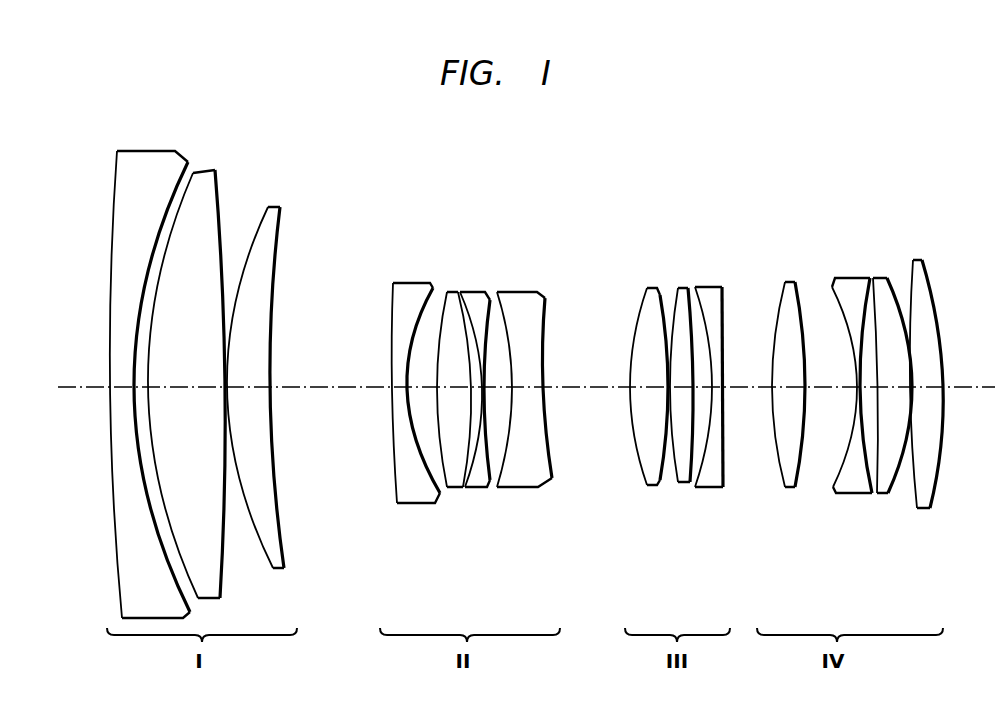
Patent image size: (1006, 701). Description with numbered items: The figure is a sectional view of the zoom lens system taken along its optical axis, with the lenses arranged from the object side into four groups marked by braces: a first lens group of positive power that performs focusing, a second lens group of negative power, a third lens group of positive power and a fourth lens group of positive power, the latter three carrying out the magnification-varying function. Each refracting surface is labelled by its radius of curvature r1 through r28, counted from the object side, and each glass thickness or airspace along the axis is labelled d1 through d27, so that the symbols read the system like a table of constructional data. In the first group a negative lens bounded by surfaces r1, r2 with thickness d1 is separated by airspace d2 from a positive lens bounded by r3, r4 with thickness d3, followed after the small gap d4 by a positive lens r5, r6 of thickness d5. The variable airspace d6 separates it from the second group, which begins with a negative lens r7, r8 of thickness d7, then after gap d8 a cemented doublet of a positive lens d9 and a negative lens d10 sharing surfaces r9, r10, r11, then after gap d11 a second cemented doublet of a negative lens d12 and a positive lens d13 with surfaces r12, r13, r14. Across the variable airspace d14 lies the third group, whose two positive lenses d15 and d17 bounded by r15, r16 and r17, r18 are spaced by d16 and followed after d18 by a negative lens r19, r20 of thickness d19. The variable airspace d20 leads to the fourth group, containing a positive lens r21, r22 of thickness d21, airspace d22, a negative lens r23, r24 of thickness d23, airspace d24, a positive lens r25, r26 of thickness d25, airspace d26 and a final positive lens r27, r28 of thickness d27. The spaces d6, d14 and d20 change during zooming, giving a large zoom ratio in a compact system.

The radius of curvature of first lens surface r1 is at (113, 180).
The radius of curvature of second lens surface r2 is at (175, 182).
The radius of curvature of third lens surface r3 is at (188, 190).
The radius of curvature of fourth lens surface r4 is at (221, 195).
The radius of curvature of fifth lens surface r5 is at (253, 237).
The radius of curvature of sixth lens surface r6 is at (278, 233).
The radius of curvature of seventh lens surface r7 is at (392, 317).
The radius of curvature of eighth lens surface r8 is at (429, 308).
The radius of curvature of ninth lens surface r9 is at (444, 307).
The radius of curvature of tenth lens surface r10 is at (450, 292).
The radius of curvature of eleventh lens surface r11 is at (483, 312).
The radius of curvature of twelfth lens surface r12 is at (489, 320).
The radius of curvature of thirteenth lens surface r13 is at (522, 310).
The radius of curvature of fourteenth lens surface r14 is at (546, 318).
The radius of curvature of fifteenth lens surface r15 is at (640, 317).
The radius of curvature of sixteenth lens surface r16 is at (662, 302).
The radius of curvature of seventeenth lens surface r17 is at (673, 295).
The radius of curvature of eighteenth lens surface r18 is at (685, 292).
The radius of curvature of nineteenth lens surface r19 is at (707, 288).
The radius of curvature of twentieth lens surface r20 is at (725, 292).
The radius of curvature of twenty-first lens surface r21 is at (777, 317).
The radius of curvature of twenty-second lens surface r22 is at (802, 297).
The radius of curvature of twenty-third lens surface r23 is at (836, 302).
The radius of curvature of twenty-fourth lens surface r24 is at (867, 296).
The radius of curvature of twenty-fifth lens surface r25 is at (878, 278).
The radius of curvature of twenty-sixth lens surface r26 is at (890, 287).
The radius of curvature of twenty-seventh lens surface r27 is at (913, 262).
The radius of curvature of twenty-eighth lens surface r28 is at (933, 300).
The thickness of first lens d1 is at (120, 392).
The first airspace d2 is at (141, 392).
The thickness of second lens d3 is at (168, 392).
The second airspace d4 is at (224, 392).
The thickness of third lens d5 is at (248, 392).
The variable airspace between first and second lens groups d6 is at (300, 392).
The thickness of fourth lens d7 is at (397, 392).
The airspace between fourth and fifth lenses d8 is at (412, 392).
The thickness of fifth lens d9 is at (452, 392).
The thickness of sixth lens d10 is at (477, 392).
The airspace between sixth and seventh lenses d11 is at (494, 392).
The thickness of seventh lens d12 is at (498, 392).
The thickness of eighth lens d13 is at (530, 392).
The variable airspace between second and third lens groups d14 is at (605, 392).
The thickness of ninth lens d15 is at (648, 392).
The airspace between ninth and tenth lenses d16 is at (668, 386).
The thickness of tenth lens d17 is at (675, 392).
The airspace between tenth and eleventh lenses d18 is at (701, 392).
The thickness of eleventh lens d19 is at (712, 392).
The variable airspace between third and fourth lens groups d20 is at (747, 392).
The thickness of twelfth lens d21 is at (786, 386).
The airspace between twelfth and thirteenth lenses d22 is at (823, 392).
The thickness of thirteenth lens d23 is at (857, 385).
The airspace between thirteenth and fourteenth lenses d24 is at (866, 392).
The thickness of fourteenth lens d25 is at (893, 392).
The airspace between fourteenth and fifteenth lenses d26 is at (918, 392).
The thickness of fifteenth lens d27 is at (930, 392).